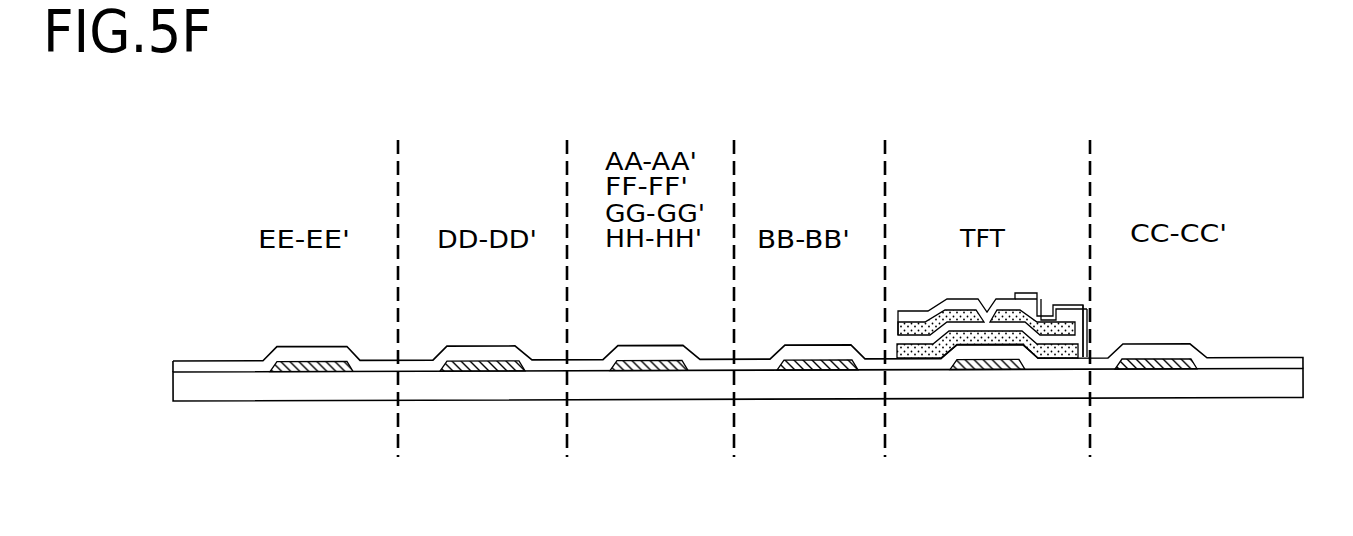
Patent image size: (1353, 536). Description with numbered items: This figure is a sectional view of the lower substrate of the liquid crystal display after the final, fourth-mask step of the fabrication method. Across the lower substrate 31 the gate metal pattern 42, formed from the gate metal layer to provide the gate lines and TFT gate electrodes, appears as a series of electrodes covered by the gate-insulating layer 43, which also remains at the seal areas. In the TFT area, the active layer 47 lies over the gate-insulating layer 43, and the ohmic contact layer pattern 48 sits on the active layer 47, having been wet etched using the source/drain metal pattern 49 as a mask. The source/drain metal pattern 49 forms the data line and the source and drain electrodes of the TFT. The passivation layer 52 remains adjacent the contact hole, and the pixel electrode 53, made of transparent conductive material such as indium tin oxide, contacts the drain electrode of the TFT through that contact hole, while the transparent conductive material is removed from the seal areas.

The lower substrate 31 is at (1293, 383).
The gate metal pattern 42 is at (307, 373).
The gate-insulating layer 43 is at (172, 363).
The active layer 47 is at (895, 352).
The ohmic contact layer pattern 48 is at (898, 342).
The source/drain metal pattern 49 is at (1088, 323).
The passivation layer 52 is at (933, 305).
The pixel electrode 53 is at (1040, 293).